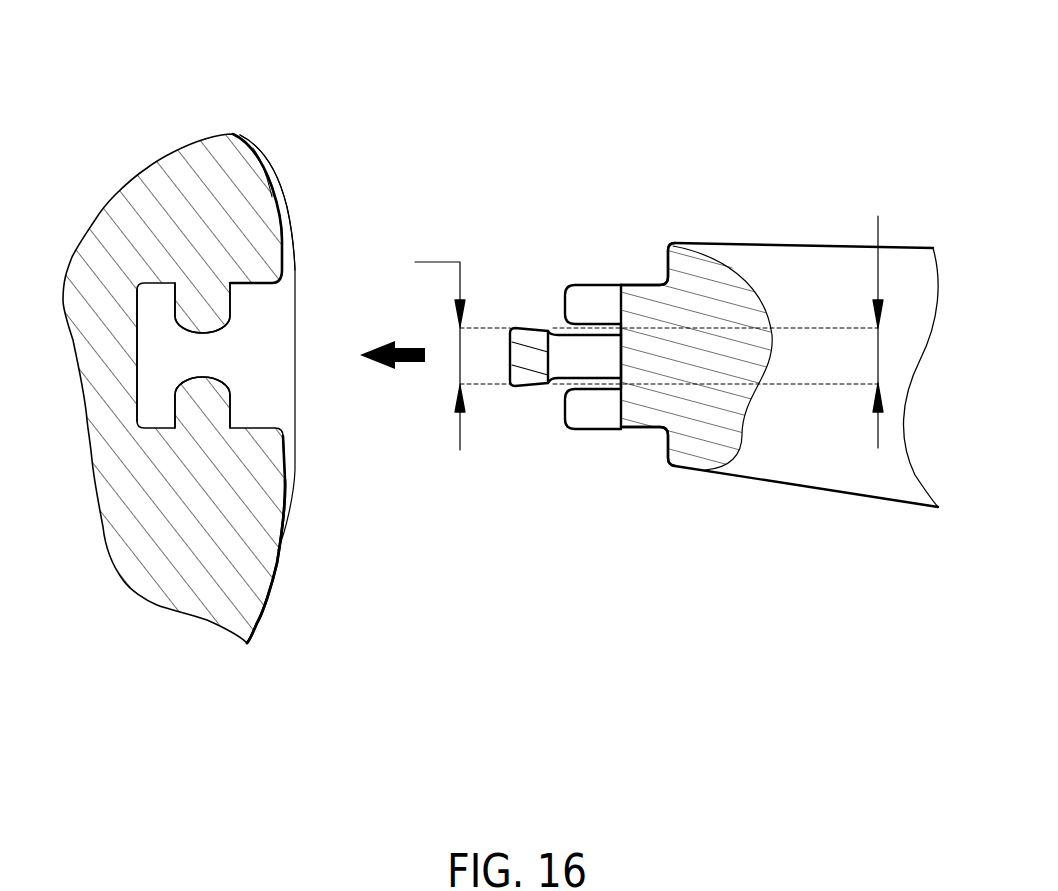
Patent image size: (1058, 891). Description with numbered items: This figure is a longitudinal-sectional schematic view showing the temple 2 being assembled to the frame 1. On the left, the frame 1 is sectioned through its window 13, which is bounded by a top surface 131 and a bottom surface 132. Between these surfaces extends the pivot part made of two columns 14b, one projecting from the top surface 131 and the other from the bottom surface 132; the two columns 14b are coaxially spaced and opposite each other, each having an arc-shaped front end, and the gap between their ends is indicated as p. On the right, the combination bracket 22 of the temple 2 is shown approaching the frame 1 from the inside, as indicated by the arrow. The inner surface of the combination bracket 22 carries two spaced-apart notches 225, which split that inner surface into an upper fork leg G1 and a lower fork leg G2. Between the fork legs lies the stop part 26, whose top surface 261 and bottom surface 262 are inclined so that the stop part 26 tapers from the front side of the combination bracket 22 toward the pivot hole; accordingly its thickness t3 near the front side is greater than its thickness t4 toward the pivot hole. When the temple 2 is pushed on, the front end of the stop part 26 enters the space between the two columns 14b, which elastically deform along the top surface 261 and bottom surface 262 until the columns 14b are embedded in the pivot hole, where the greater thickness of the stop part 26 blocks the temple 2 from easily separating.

The frame 1 is at (183, 170).
The window 13 is at (155, 318).
The top surface 131 is at (262, 200).
The bottom surface 132 is at (285, 482).
The column 14b is at (220, 306).
The pitch p is at (222, 378).
The temple 2 is at (787, 243).
The combination bracket 22 is at (642, 300).
The notch 225 is at (603, 322).
The stop part 26 is at (525, 353).
The top surface 261 is at (518, 326).
The bottom surface 262 is at (533, 387).
The upper fork leg G1 is at (580, 298).
The lower fork leg G2 is at (575, 408).
The thickness t3 is at (440, 334).
The thickness t4 is at (889, 313).